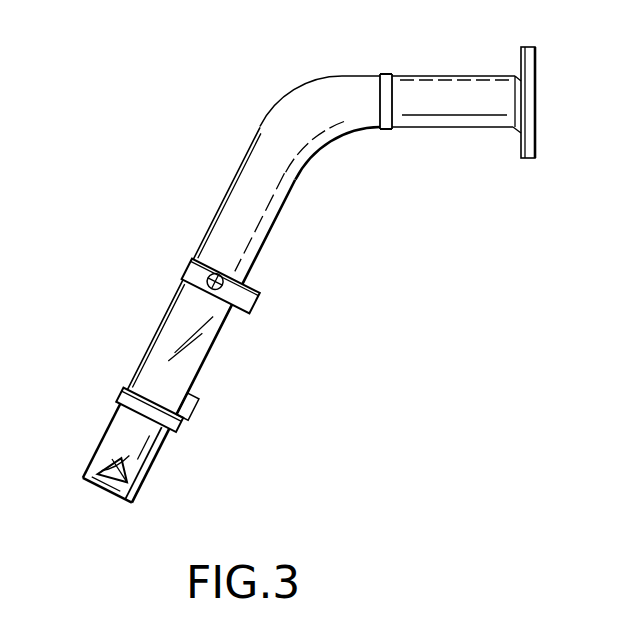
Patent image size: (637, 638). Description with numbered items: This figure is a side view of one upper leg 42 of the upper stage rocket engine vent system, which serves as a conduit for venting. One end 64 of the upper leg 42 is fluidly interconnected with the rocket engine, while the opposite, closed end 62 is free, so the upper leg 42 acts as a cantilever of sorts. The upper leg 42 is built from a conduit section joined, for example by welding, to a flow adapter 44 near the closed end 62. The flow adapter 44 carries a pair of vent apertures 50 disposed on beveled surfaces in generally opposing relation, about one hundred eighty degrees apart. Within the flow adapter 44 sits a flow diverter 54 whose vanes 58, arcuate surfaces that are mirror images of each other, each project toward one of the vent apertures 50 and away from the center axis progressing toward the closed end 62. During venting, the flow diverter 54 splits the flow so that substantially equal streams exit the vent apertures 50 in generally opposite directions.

The upper leg 42 is at (443, 76).
The end 64 is at (535, 63).
The flow diverter 54 is at (135, 460).
The flow adapter 44 is at (141, 483).
The vent aperture 50 is at (125, 458).
The vane 58 is at (98, 486).
The closed end 62 is at (112, 496).